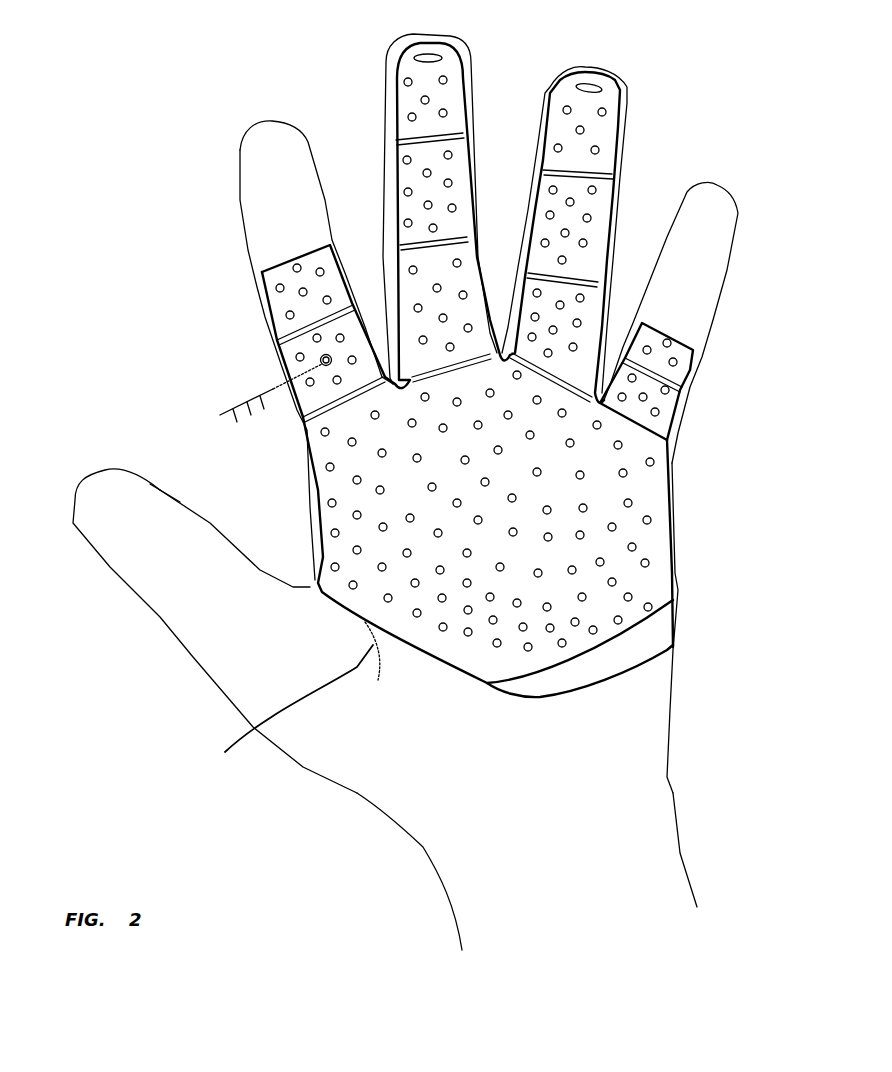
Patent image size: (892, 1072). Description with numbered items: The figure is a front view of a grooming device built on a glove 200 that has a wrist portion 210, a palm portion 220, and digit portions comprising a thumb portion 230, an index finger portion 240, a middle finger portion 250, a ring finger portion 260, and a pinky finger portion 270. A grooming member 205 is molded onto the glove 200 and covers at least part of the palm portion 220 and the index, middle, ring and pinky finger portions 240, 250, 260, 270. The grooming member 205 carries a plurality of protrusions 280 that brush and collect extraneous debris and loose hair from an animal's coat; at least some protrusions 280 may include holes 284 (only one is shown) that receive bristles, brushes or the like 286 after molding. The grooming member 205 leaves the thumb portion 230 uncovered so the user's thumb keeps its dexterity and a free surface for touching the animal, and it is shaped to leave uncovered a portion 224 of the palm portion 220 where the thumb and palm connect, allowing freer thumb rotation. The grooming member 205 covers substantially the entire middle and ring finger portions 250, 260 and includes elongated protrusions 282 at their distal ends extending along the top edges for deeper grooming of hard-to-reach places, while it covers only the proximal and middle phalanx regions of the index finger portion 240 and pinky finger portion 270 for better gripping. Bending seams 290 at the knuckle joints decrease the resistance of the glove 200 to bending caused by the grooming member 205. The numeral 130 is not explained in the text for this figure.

The thumb portion 130 is at (166, 497).
The glove 200 is at (350, 805).
The grooming member 205 is at (607, 665).
The wrist portion 210 is at (665, 852).
The palm portion 220 is at (652, 712).
The portion of the palm portion 224 is at (294, 701).
The thumb portion 230 is at (138, 495).
The index finger portion 240 is at (240, 150).
The middle finger portion 250 is at (387, 80).
The ring finger portion 260 is at (628, 106).
The pinky finger portion 270 is at (740, 210).
The protrusions 280 is at (592, 217).
The elongated protrusions 282 is at (435, 52).
The holes 284 is at (325, 363).
The bristles, brushes or the like 286 is at (258, 402).
The bending seams 290 is at (462, 137).